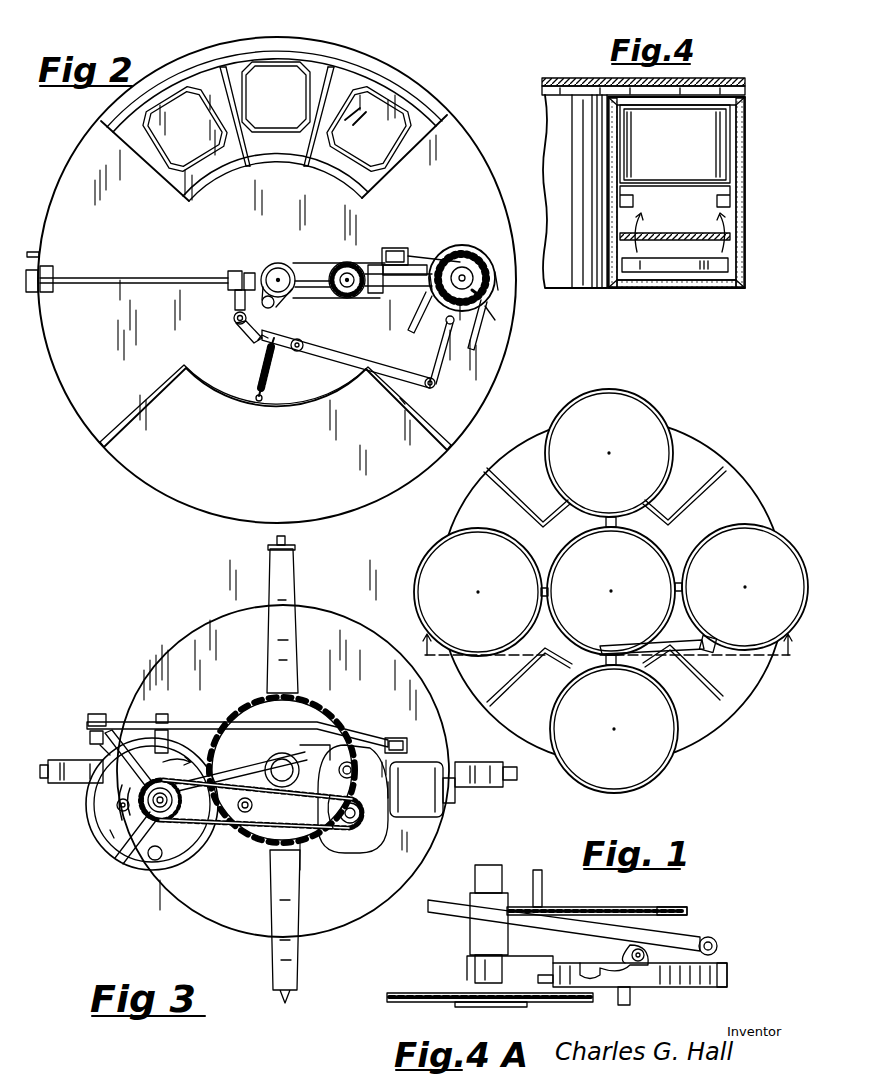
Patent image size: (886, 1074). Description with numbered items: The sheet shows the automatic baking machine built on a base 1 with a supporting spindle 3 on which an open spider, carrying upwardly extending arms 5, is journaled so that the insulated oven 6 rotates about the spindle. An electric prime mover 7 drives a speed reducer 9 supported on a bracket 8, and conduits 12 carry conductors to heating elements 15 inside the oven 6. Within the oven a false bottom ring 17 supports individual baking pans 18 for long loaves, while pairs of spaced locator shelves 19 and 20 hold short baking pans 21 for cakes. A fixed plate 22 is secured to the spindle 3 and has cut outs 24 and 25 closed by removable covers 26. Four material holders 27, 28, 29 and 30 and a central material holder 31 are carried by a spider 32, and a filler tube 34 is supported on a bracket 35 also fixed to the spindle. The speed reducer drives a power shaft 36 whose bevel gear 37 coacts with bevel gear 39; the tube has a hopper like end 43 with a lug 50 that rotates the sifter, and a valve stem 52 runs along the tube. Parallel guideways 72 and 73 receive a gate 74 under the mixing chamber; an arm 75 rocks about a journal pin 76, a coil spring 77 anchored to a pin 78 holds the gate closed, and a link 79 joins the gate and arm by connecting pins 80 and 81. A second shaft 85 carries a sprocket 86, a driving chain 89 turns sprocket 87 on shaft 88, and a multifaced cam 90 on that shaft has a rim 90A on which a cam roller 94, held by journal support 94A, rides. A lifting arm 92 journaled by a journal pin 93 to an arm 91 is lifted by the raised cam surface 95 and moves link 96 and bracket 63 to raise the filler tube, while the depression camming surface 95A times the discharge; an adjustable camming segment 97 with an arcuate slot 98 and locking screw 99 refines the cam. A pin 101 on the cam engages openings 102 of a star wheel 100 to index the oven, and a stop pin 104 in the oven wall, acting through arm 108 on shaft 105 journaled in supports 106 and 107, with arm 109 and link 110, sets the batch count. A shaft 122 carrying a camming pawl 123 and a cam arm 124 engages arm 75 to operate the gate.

In FIG. 3, the base 1 is at (418, 728).
In FIG. 2, the supporting spindle 3 is at (280, 262).
In FIG. 3, the supporting spindle 3 is at (282, 760).
In FIG. 4A, the supporting spindle 3 is at (490, 875).
In FIG. 1, the arms 5 is at (607, 657).
In FIG. 3, the arms 5 is at (295, 548).
In FIG. 2, the insulated oven 6 is at (437, 108).
In FIG. 4, the insulated oven 6 is at (742, 222).
In FIG. 3, the electric prime mover 7 is at (430, 780).
In FIG. 3, the bracket 8 is at (320, 735).
In FIG. 4A, the bracket 8 is at (467, 968).
In FIG. 3, the speed reducer 9 is at (380, 835).
In FIG. 3, the conduits 12 is at (283, 590).
In FIG. 4, the heating elements 15 is at (672, 272).
In FIG. 2, the false bottom ring 17 is at (205, 85).
In FIG. 4, the false bottom ring 17 is at (655, 237).
In FIG. 2, the individual baking pans 18 is at (308, 85).
In FIG. 2, the locator shelf 19 is at (380, 85).
In FIG. 2, the locator shelf 20 is at (356, 165).
In FIG. 4, the individual baking pans 21 is at (712, 148).
In FIG. 2, the fixed plate 22 is at (462, 193).
In FIG. 4, the fixed plate 22 is at (683, 80).
In FIG. 1, the fixed plate 22 is at (737, 688).
In FIG. 2, the cut out 24 is at (405, 138).
In FIG. 2, the cut out 25 is at (442, 455).
In FIG. 2, the removable covers 26 is at (200, 495).
In FIG. 1, the removable covers 26 is at (702, 470).
In FIG. 1, the material holder 27 is at (740, 538).
In FIG. 1, the material holder 28 is at (641, 412).
In FIG. 1, the material holder 29 is at (425, 582).
In FIG. 1, the material holder 30 is at (641, 762).
In FIG. 1, the central material holder 31 is at (640, 556).
In FIG. 1, the spider 32 is at (600, 655).
In FIG. 2, the filler tube 34 is at (486, 302).
In FIG. 2, the bracket 35 is at (312, 266).
In FIG. 2, the power shaft 36 is at (352, 270).
In FIG. 3, the power shaft 36 is at (349, 763).
In FIG. 2, the bevel gear 37 is at (350, 268).
In FIG. 2, the bevel gear 39 is at (395, 262).
In FIG. 2, the hopper like end 43 is at (470, 258).
In FIG. 2, the lug 50 is at (482, 288).
In FIG. 2, the valve stem 52 is at (466, 280).
In FIG. 2, the bracket 63 is at (408, 256).
In FIG. 2, the guideway 72 is at (420, 332).
In FIG. 2, the guideway 73 is at (490, 345).
In FIG. 2, the gate 74 is at (470, 347).
In FIG. 2, the arm 75 is at (335, 350).
In FIG. 1, the arm 75 is at (668, 656).
In FIG. 2, the journal pin 76 is at (300, 351).
In FIG. 2, the coil spring 77 is at (270, 378).
In FIG. 2, the pin 78 is at (262, 400).
In FIG. 2, the link 79 is at (433, 388).
In FIG. 1, the link 79 is at (712, 656).
In FIG. 2, the connecting pin 80 is at (448, 322).
In FIG. 2, the connecting pin 81 is at (420, 415).
In FIG. 3, the shaft 85 is at (372, 840).
In FIG. 3, the sprocket 86 is at (347, 826).
In FIG. 3, the sprocket 87 is at (168, 812).
In FIG. 3, the shaft 88 is at (158, 805).
In FIG. 3, the driving chain 89 is at (260, 828).
In FIG. 4A, the driving chain 89 is at (605, 907).
In FIG. 3, the multifaced cam 90 is at (180, 870).
In FIG. 4A, the multifaced cam 90 is at (700, 990).
In FIG. 3, the rim 90A is at (140, 820).
In FIG. 4A, the rim 90A is at (665, 905).
In FIG. 3, the arm 91 is at (92, 742).
In FIG. 3, the lifting arm 92 is at (220, 722).
In FIG. 4A, the lifting arm 92 is at (450, 905).
In FIG. 3, the journal pin 93 is at (100, 715).
In FIG. 4A, the journal pin 93 is at (718, 945).
In FIG. 3, the cam roller 94 is at (170, 735).
In FIG. 4A, the cam roller 94 is at (640, 988).
In FIG. 3, the journal support 94A is at (163, 713).
In FIG. 3, the raised cam surface 95 is at (105, 770).
In FIG. 4A, the raised cam surface 95 is at (725, 965).
In FIG. 3, the depression camming surface 95A is at (190, 722).
In FIG. 4A, the depression camming surface 95A is at (600, 985).
In FIG. 3, the link 96 is at (407, 746).
In FIG. 3, the adjustable camming segment 97 is at (140, 800).
In FIG. 3, the arcuate slot 98 is at (112, 835).
In FIG. 3, the locking screw 99 is at (120, 807).
In FIG. 3, the star wheel 100 is at (300, 700).
In FIG. 4A, the star wheel 100 is at (440, 1000).
In FIG. 3, the pin 101 is at (155, 860).
In FIG. 4A, the pin 101 is at (630, 1000).
In FIG. 3, the openings 102 is at (215, 840).
In FIG. 2, the stop pin 104 is at (35, 268).
In FIG. 2, the shaft 105 is at (152, 275).
In FIG. 2, the journal support 106 is at (60, 289).
In FIG. 2, the journal support 107 is at (248, 270).
In FIG. 2, the arm 108 is at (75, 279).
In FIG. 2, the arm 109 is at (235, 295).
In FIG. 2, the link 110 is at (275, 305).
In FIG. 2, the shaft 122 is at (238, 325).
In FIG. 3, the shaft 122 is at (243, 752).
In FIG. 4A, the shaft 122 is at (540, 890).
In FIG. 3, the camming pawl 123 is at (252, 806).
In FIG. 4A, the camming pawl 123 is at (548, 985).
In FIG. 2, the cam arm 124 is at (245, 325).